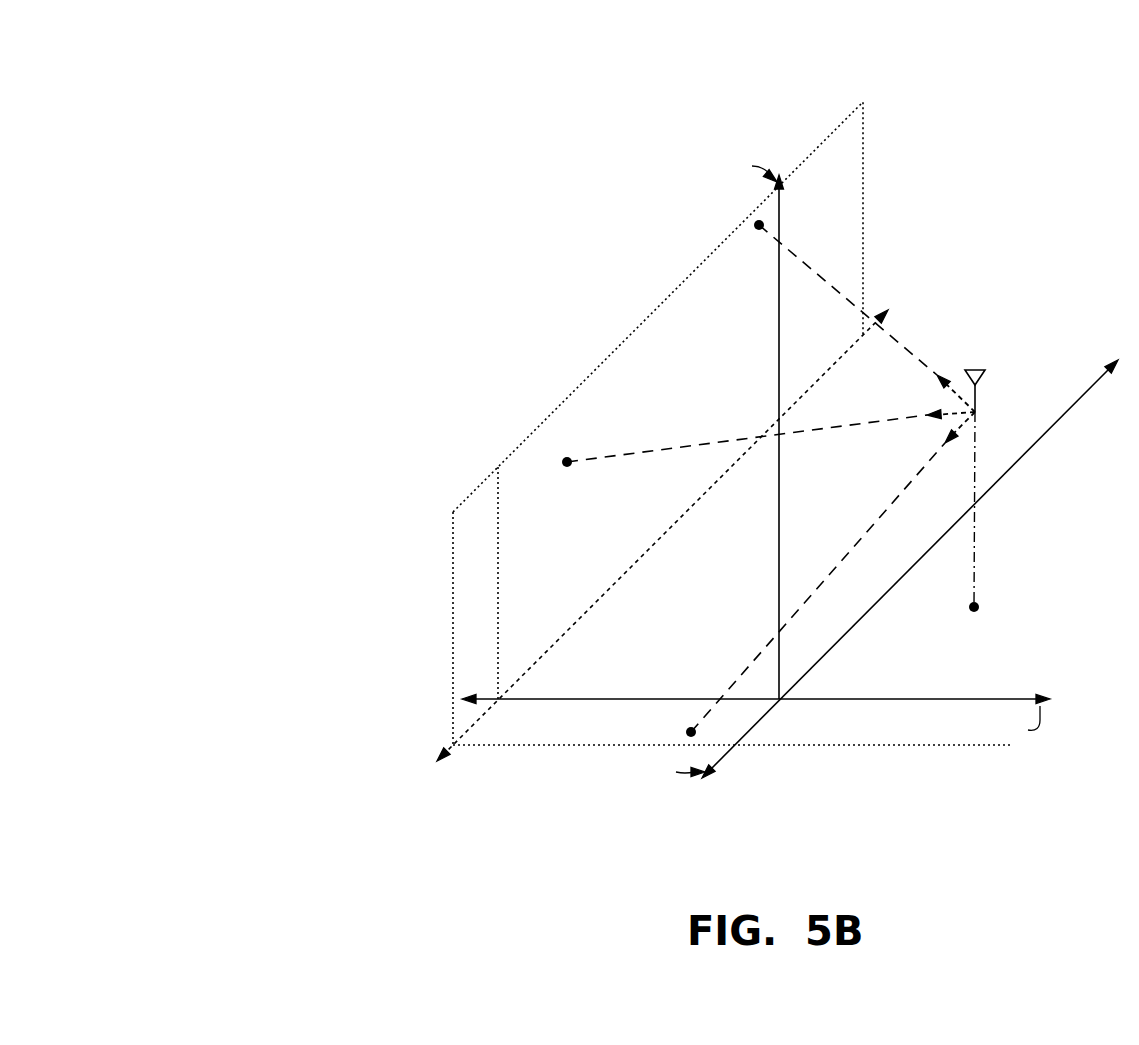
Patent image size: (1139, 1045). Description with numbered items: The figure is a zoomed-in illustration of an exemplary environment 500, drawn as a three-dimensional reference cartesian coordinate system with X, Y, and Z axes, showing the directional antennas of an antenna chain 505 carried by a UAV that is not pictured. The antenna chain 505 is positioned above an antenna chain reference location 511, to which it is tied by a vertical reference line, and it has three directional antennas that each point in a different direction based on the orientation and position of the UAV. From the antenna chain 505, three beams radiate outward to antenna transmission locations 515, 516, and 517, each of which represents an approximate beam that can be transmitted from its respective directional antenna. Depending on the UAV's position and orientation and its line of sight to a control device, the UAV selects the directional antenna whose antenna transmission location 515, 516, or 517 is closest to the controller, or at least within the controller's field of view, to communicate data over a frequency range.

The exemplary environment 500 is at (166, 116).
The antenna chain 505 is at (979, 350).
The antenna chain reference location 511 is at (992, 595).
The antenna transmission location 515 is at (675, 717).
The antenna transmission location 516 is at (552, 454).
The antenna transmission location 517 is at (742, 222).